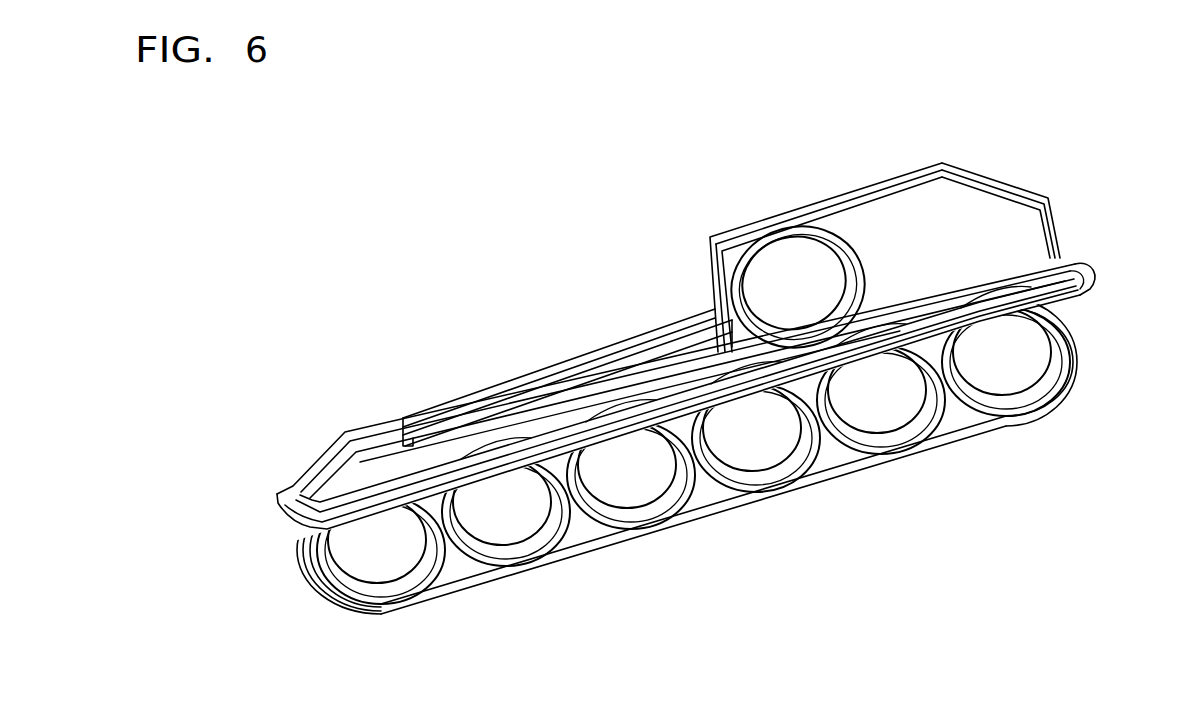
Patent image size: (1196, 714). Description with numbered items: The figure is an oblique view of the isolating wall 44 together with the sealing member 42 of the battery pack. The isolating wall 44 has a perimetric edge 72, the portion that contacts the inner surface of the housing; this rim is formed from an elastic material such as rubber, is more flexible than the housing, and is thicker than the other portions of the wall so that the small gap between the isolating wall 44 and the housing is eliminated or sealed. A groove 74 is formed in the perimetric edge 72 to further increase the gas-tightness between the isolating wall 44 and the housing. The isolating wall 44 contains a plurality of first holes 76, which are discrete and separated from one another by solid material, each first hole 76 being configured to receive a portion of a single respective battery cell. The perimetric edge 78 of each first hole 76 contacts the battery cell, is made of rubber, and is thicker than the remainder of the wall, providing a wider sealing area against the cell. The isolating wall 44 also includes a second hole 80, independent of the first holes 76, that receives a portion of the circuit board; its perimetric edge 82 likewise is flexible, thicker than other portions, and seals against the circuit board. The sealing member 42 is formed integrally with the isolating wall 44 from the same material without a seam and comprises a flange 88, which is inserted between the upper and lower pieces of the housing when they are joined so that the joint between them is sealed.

The sealing member 42 is at (1070, 247).
The isolating wall 44 is at (993, 213).
The perimetric edge 72 is at (934, 163).
The groove 74 is at (887, 182).
The first hole 76 is at (870, 291).
The perimetric edge of first hole 78 is at (812, 227).
The second hole 80 is at (435, 437).
The perimetric edge of second hole 82 is at (398, 446).
The flange 88 is at (1097, 268).